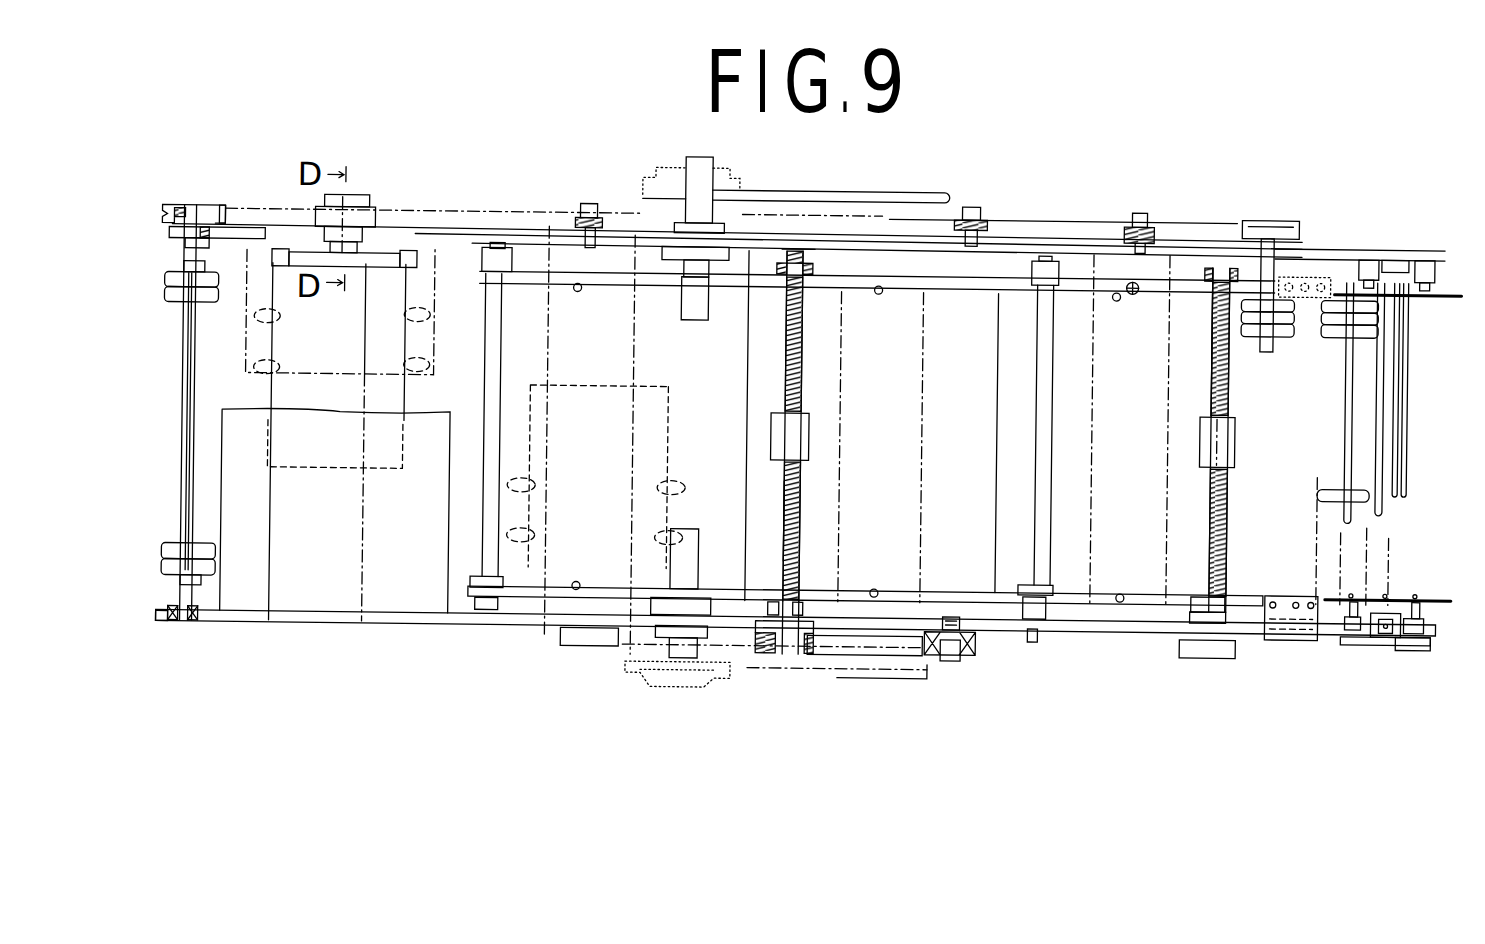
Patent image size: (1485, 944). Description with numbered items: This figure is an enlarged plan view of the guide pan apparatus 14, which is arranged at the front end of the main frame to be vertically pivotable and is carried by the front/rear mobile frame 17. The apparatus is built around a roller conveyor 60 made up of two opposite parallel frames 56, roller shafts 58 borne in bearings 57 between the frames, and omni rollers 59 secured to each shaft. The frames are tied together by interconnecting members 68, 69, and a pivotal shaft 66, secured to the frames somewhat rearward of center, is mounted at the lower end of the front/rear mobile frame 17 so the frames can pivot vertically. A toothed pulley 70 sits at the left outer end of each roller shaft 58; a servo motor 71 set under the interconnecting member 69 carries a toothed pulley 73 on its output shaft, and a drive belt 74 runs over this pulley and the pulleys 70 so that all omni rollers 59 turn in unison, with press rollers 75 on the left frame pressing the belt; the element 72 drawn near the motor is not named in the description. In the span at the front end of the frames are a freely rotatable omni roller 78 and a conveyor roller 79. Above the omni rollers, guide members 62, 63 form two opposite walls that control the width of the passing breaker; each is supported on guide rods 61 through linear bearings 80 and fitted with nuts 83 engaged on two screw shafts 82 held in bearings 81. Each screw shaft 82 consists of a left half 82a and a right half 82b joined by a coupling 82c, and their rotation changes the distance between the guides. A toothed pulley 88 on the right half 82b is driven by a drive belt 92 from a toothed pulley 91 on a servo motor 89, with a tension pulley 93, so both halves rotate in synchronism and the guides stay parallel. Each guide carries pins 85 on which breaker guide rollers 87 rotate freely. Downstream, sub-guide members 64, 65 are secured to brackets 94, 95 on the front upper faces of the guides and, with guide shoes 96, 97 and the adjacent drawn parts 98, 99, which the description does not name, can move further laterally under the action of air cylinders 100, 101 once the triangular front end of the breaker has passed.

The guide pan apparatus 14 is at (1035, 216).
The front/rear mobile frame 17 is at (773, 188).
The frame 56 is at (253, 228).
The bearing 57 is at (178, 244).
The roller shaft 58 is at (180, 450).
The omni roller 59 is at (170, 300).
The roller conveyor 60 is at (1100, 305).
The guide rod 61 is at (492, 244).
The guide member 62 is at (940, 288).
The guide member 63 is at (1076, 617).
The sub-guide member 64 is at (1440, 291).
The sub-guide member 65 is at (1445, 590).
The pivotal shaft 66 is at (682, 652).
The interconnecting member 68 is at (530, 600).
The interconnecting member 69 is at (404, 618).
The toothed pulley 70 is at (166, 214).
The servo motor 71 is at (395, 282).
The bolt 72 is at (345, 216).
The toothed pulley 73 is at (368, 250).
The drive belt 74 is at (908, 194).
The press roller 75 is at (580, 210).
The omni roller 78 is at (1330, 492).
The conveyor roller 79 is at (1405, 398).
The linear bearing 80 is at (490, 262).
The bearing 81 is at (760, 632).
The screw shaft 82 is at (800, 505).
The left half screw shaft 82a is at (1212, 393).
The right half screw shaft 82b is at (800, 540).
The coupling 82c is at (805, 435).
The nut 83 is at (775, 283).
The pin 85 is at (1137, 289).
The breaker guide roller 87 is at (576, 294).
The toothed pulley 88 is at (768, 652).
The servo motor 89 is at (495, 552).
The toothed pulley 91 is at (585, 648).
The drive belt 92 is at (640, 648).
The tension pulley 93 is at (955, 661).
The bracket 94 is at (1305, 256).
The bracket 95 is at (1293, 635).
The guide shoe 96 is at (1340, 275).
The guide shoe 97 is at (1352, 630).
The roller 98 is at (1372, 272).
The bolt 99 is at (1360, 590).
The air cylinder 100 is at (1400, 252).
The air cylinder 101 is at (1386, 630).